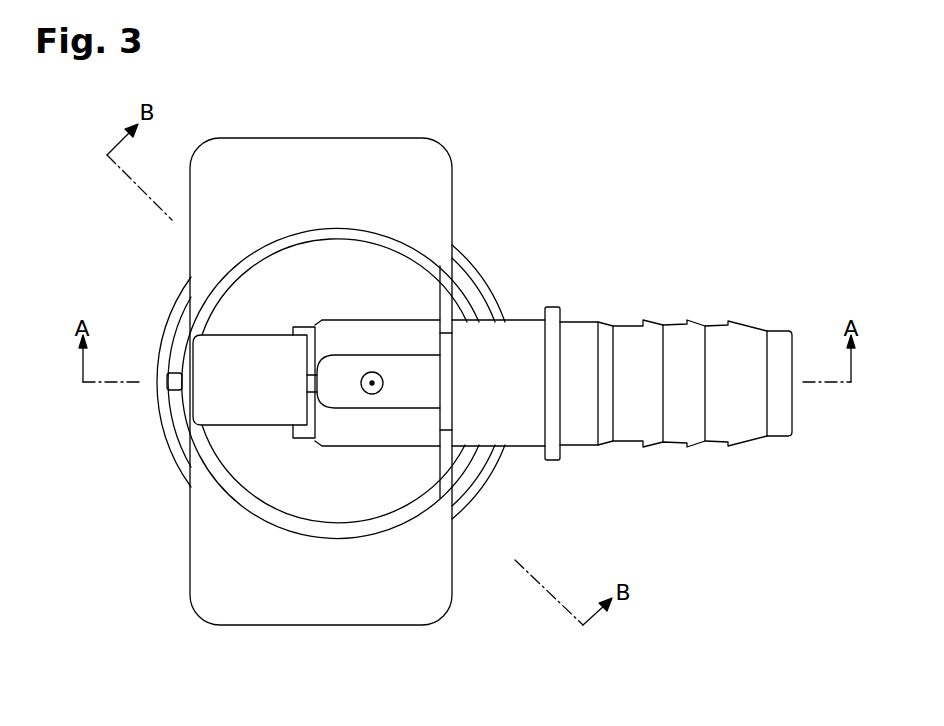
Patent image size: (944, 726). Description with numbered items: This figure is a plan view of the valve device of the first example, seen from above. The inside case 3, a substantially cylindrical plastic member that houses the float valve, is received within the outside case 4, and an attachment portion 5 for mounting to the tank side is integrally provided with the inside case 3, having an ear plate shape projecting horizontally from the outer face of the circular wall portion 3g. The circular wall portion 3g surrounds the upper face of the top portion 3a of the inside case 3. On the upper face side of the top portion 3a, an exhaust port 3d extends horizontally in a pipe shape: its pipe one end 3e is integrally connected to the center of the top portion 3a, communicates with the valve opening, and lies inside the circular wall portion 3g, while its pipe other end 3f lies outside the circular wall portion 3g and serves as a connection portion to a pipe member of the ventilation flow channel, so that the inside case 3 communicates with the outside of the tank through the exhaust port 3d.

The inside case 3 is at (477, 465).
The top portion 3a is at (263, 478).
The exhaust port 3d is at (630, 327).
The pipe one end 3e is at (331, 338).
The pipe other end 3f is at (800, 327).
The circular wall portion 3g is at (413, 240).
The outside case 4 is at (497, 293).
The attachment portion 5 is at (290, 173).